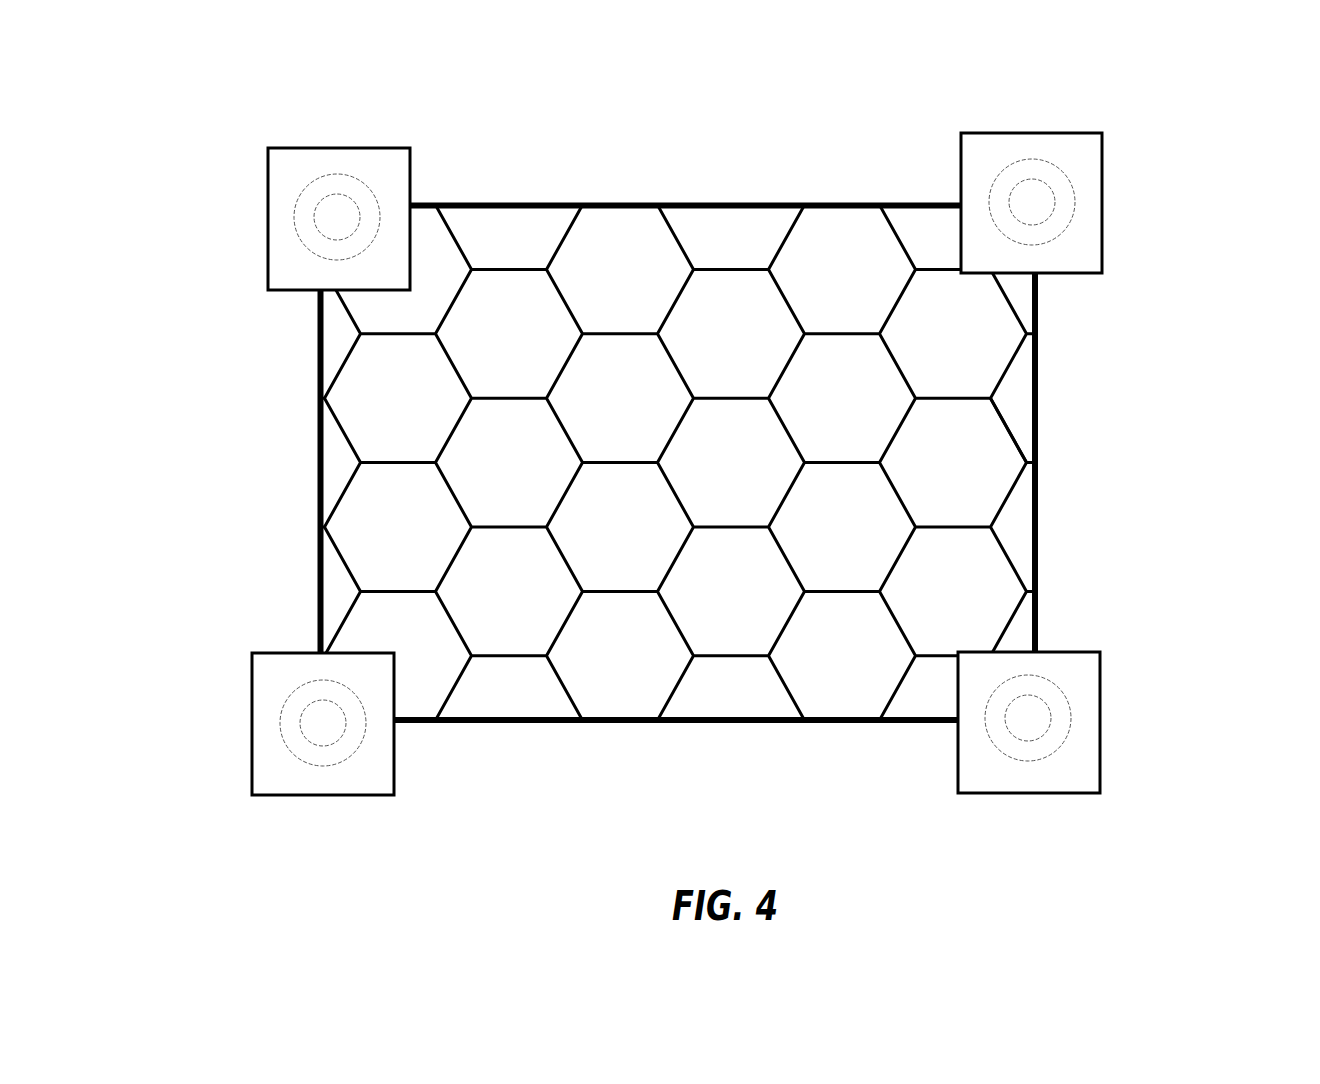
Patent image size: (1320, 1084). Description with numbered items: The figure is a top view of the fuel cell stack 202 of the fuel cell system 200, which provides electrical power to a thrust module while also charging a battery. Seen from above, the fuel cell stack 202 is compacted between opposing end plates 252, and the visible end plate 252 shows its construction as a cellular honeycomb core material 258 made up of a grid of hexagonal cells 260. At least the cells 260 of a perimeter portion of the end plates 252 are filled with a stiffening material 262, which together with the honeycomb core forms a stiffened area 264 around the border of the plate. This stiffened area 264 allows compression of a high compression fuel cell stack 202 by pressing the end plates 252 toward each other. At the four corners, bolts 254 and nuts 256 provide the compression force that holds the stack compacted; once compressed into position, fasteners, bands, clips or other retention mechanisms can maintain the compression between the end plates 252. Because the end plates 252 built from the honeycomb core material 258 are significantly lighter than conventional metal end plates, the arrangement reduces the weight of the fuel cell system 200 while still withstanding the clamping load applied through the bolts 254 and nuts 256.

The fuel cell system 200 is at (702, 435).
The fuel cell stack 202 is at (676, 430).
The end plates 252 is at (676, 430).
The stiffened area 264 is at (676, 430).
The bolts 254 is at (337, 217).
The nuts 256 is at (378, 200).
The cellular honeycomb core material 258 is at (1005, 425).
The cells 260 is at (676, 430).
The stiffening material 262 is at (602, 282).